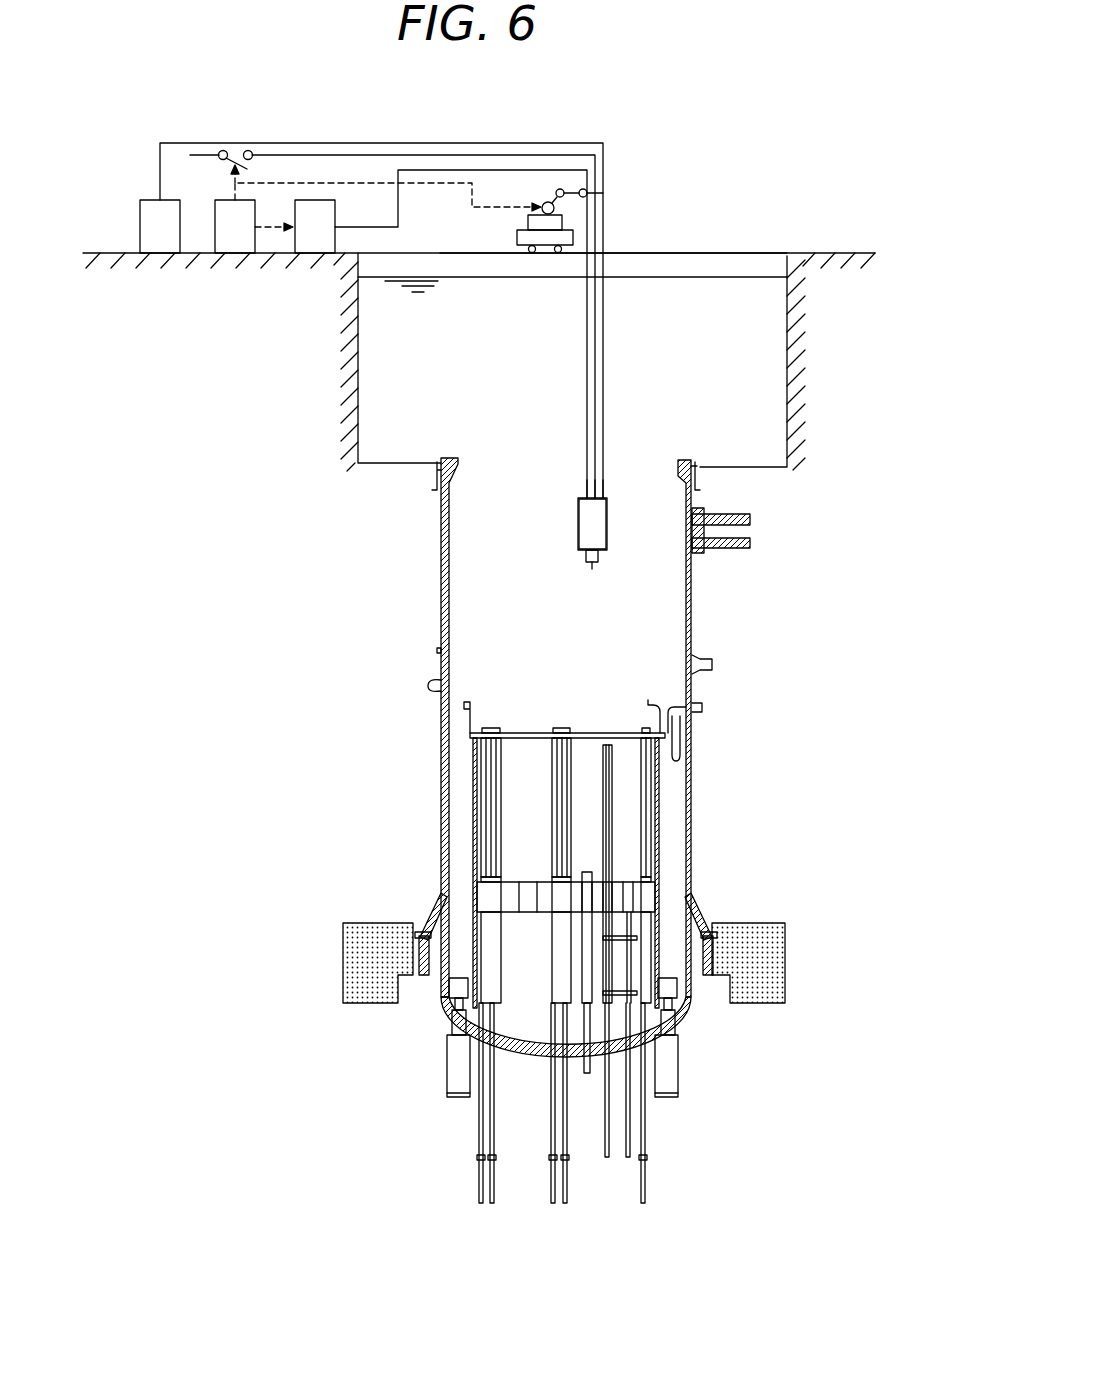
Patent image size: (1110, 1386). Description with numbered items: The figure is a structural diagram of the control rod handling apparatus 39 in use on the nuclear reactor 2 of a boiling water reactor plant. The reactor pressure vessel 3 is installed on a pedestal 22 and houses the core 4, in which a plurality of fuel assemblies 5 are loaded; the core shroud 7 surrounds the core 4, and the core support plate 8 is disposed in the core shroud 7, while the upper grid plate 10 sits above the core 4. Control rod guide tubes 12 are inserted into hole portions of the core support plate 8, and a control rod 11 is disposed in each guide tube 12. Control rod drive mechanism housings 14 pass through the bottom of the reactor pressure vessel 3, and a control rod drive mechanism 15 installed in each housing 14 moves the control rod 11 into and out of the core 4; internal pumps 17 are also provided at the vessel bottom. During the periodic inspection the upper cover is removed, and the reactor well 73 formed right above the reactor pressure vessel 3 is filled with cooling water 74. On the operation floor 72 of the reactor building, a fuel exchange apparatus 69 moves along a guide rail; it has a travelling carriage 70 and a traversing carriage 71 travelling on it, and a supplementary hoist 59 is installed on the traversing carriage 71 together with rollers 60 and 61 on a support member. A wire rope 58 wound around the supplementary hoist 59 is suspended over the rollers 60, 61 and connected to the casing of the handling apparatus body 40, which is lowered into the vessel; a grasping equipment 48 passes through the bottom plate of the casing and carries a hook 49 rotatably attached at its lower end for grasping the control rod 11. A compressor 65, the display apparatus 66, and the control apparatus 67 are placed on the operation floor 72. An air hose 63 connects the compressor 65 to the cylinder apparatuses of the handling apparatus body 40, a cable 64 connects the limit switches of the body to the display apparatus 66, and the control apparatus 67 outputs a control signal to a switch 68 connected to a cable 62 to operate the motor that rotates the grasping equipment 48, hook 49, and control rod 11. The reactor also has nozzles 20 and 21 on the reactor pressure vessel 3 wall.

The nuclear reactor 2 is at (441, 597).
The reactor pressure vessel 3 is at (692, 822).
The core 4 is at (512, 773).
The fuel assembly 5 is at (551, 800).
The core shroud 7 is at (659, 866).
The core support plate 8 is at (530, 882).
The upper grid plate 10 is at (523, 733).
The control rod 11 is at (611, 775).
The control rod guide tube 12 is at (551, 958).
The control rod drive mechanism housing 14 is at (549, 1127).
The control rod drive mechanism 15 is at (551, 1025).
The internal pump 17 is at (449, 1069).
The nozzle 20 is at (712, 663).
The nozzle 21 is at (735, 514).
The pedestal 22 is at (775, 970).
The control rod handling apparatus 39 is at (611, 441).
The handling apparatus body 40 is at (578, 520).
The grasping equipment 48 is at (600, 556).
The hook 49 is at (592, 569).
The wire rope 58 is at (585, 372).
The supplementary hoist 59 is at (544, 203).
The roller 60 is at (560, 189).
The roller 61 is at (588, 192).
The cable 62 is at (290, 154).
The air hose 63 is at (432, 170).
The cable 64 is at (346, 143).
The compressor 65 is at (312, 253).
The display apparatus 66 is at (157, 253).
The control apparatus 67 is at (231, 253).
The switch 68 is at (232, 166).
The fuel exchange apparatus 69 is at (545, 253).
The travelling carriage 70 is at (517, 237).
The traversing carriage 71 is at (562, 222).
The operation floor 72 is at (762, 255).
The reactor well 73 is at (762, 364).
The cooling water 74 is at (716, 277).